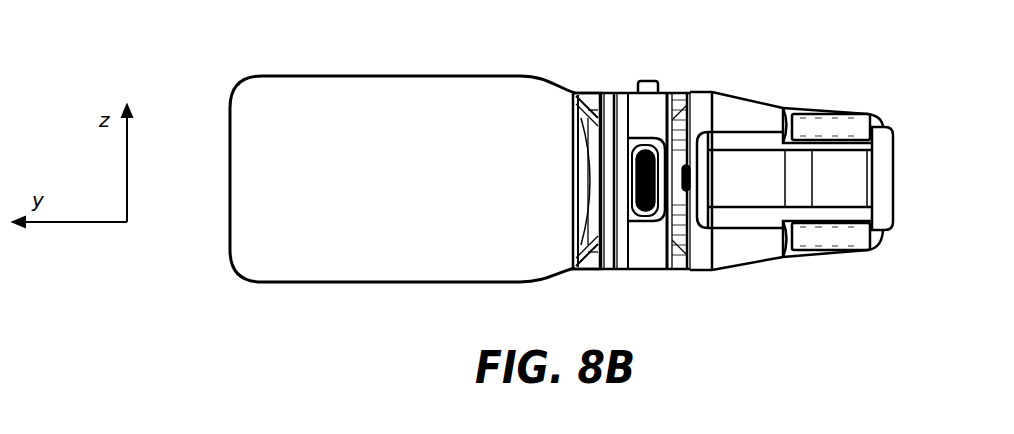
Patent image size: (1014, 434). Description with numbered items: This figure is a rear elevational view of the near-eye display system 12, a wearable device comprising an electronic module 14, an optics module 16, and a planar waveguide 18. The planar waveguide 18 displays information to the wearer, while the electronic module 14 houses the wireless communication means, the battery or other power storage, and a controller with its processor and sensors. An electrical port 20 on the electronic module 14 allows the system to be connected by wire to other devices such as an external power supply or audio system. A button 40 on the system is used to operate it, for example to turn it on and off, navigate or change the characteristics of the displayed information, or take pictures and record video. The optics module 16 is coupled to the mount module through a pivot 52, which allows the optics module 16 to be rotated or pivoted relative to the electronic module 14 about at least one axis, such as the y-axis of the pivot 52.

The near-eye display system 12 is at (383, 343).
The electronic module 14 is at (613, 142).
The optics module 16 is at (882, 118).
The planar waveguide 18 is at (402, 179).
The electrical port 20 is at (645, 213).
The button 40 is at (647, 82).
The pivot 52 is at (732, 93).